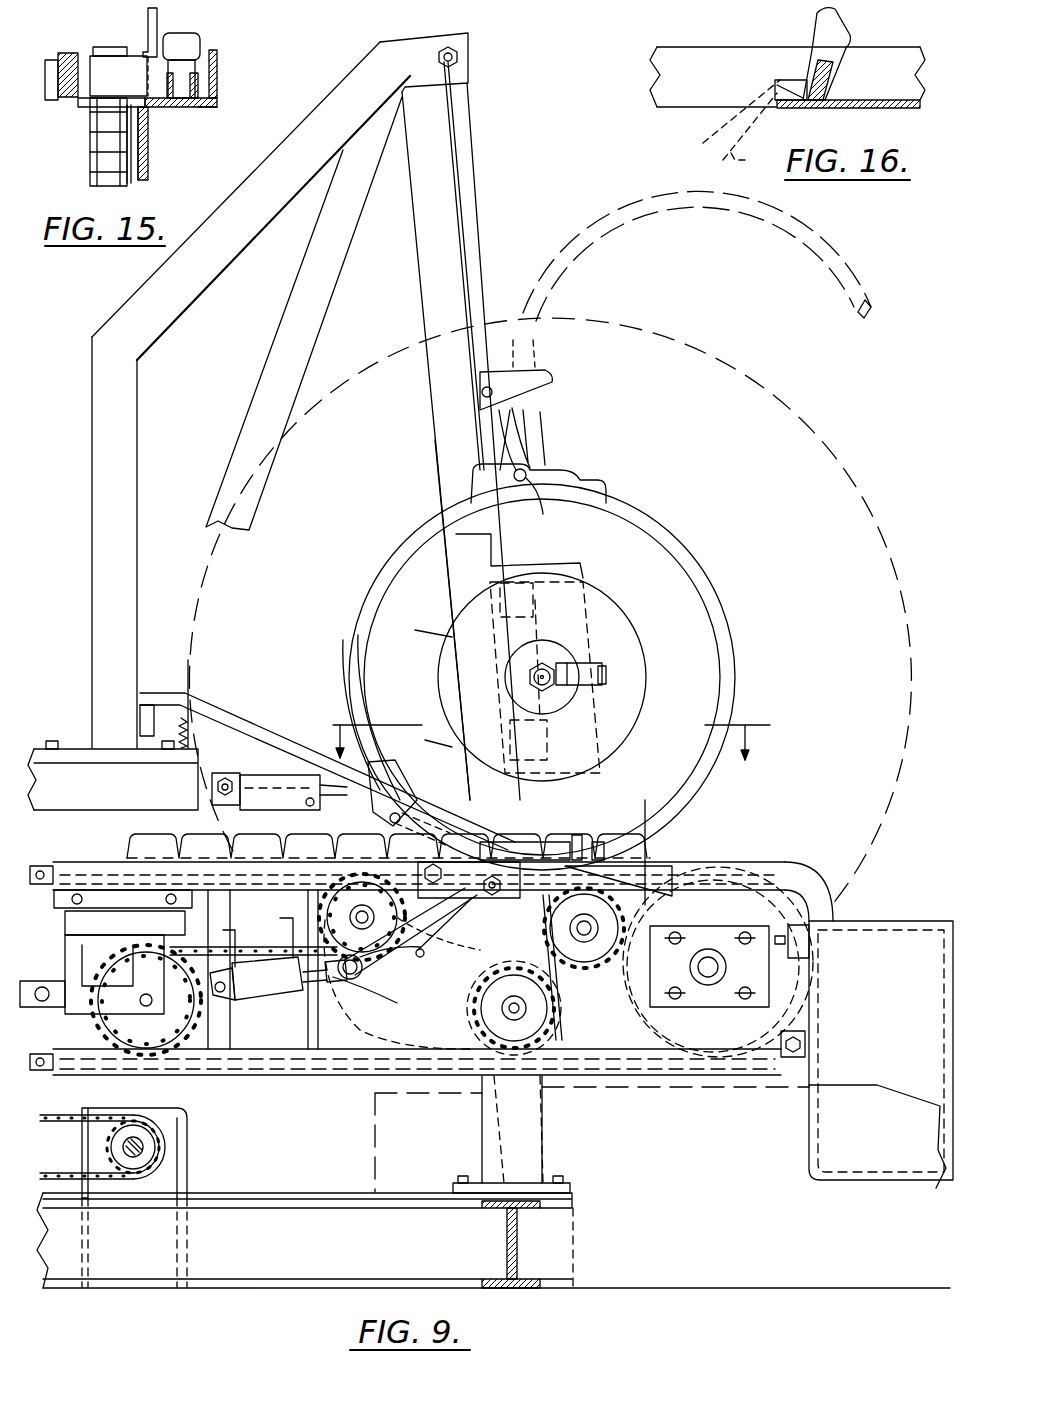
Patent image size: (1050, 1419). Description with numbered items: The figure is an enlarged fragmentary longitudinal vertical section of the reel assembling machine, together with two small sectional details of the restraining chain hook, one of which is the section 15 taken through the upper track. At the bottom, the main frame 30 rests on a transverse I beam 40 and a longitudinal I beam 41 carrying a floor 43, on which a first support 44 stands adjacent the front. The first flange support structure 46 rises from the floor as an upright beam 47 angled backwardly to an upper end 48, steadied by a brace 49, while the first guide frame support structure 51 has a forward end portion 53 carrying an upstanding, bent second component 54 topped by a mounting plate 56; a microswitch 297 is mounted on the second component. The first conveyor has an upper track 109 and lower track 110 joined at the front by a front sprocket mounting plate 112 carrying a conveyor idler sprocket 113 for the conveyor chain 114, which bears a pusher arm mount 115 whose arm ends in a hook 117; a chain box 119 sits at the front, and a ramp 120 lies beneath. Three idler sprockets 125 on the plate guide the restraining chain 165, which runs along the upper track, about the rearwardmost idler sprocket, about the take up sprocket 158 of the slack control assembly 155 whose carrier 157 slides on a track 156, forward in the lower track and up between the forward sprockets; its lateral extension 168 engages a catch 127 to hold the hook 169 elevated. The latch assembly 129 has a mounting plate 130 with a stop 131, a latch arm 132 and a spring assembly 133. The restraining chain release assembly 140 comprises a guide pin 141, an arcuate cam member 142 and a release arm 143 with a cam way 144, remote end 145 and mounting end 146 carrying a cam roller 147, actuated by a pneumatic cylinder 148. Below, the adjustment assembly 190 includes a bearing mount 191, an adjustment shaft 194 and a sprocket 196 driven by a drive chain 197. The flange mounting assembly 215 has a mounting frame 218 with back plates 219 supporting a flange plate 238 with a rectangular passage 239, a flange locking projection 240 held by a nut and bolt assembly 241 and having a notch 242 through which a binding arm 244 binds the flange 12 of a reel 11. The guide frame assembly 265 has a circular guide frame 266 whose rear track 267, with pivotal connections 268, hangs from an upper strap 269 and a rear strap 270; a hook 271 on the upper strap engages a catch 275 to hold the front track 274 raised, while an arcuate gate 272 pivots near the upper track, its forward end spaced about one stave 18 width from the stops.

In FIG. 9, the reel 11 is at (832, 393).
In FIG. 9, the flange 12 is at (838, 455).
In FIG. 9, the motor 15 is at (630, 900).
In FIG. 9, the stave 18 is at (197, 834).
In FIG. 9, the main frame 30 is at (545, 1140).
In FIG. 9, the transverse I beam 40 is at (507, 1236).
In FIG. 9, the longitudinal I beam 41 is at (285, 1265).
In FIG. 9, the floor 43 is at (610, 1288).
In FIG. 9, the first support 44 is at (482, 1128).
In FIG. 9, the first flange support structure 46 is at (88, 332).
In FIG. 9, the upright beam 47 is at (440, 442).
In FIG. 9, the upper end 48 is at (420, 136).
In FIG. 9, the brace 49 is at (338, 275).
In FIG. 9, the first guide frame support structure 51 is at (213, 238).
In FIG. 9, the forward end portion 53 is at (138, 796).
In FIG. 9, the second component 54 is at (108, 543).
In FIG. 9, the mounting plate 56 is at (468, 44).
In FIG. 15, the upper track 109 is at (218, 82).
In FIG. 16, the upper track 109 is at (880, 108).
In FIG. 9, the upper track 109 is at (82, 862).
In FIG. 9, the lower track 110 is at (262, 1077).
In FIG. 15, the front sprocket mounting plate 112 is at (148, 163).
In FIG. 9, the front sprocket mounting plate 112 is at (408, 1040).
In FIG. 9, the conveyor idler sprocket 113 is at (592, 1139).
In FIG. 15, the conveyor chain 114 is at (200, 108).
In FIG. 9, the conveyor chain 114 is at (720, 870).
In FIG. 15, the pusher arm mount 115 is at (190, 55).
In FIG. 15, the hook 117 is at (190, 38).
In FIG. 9, the chain box 119 is at (888, 932).
In FIG. 9, the ramp 120 is at (925, 1100).
In FIG. 9, the idler sprocket 125 is at (350, 900).
In FIG. 15, the catch 127 is at (148, 120).
In FIG. 16, the catch 127 is at (800, 95).
In FIG. 9, the latch assembly 129 is at (618, 820).
In FIG. 9, the mounting plate 130 is at (640, 862).
In FIG. 9, the stop 131 is at (548, 845).
In FIG. 15, the latch arm 132 is at (52, 100).
In FIG. 9, the latch arm 132 is at (598, 842).
In FIG. 9, the spring assembly 133 is at (480, 967).
In FIG. 9, the restraining chain release assembly 140 is at (345, 1042).
In FIG. 9, the guide pin 141 is at (440, 960).
In FIG. 9, the arcuate cam member 142 is at (365, 995).
In FIG. 9, the release arm 143 is at (400, 1003).
In FIG. 9, the cam way 144 is at (420, 948).
In FIG. 9, the remote end 145 is at (423, 984).
In FIG. 9, the mounting end 146 is at (345, 982).
In FIG. 9, the cam roller 147 is at (312, 925).
In FIG. 9, the pneumatic cylinder 148 is at (270, 995).
In FIG. 9, the slack control assembly 155 is at (185, 1050).
In FIG. 9, the track 156 is at (60, 895).
In FIG. 9, the carrier 157 is at (75, 1005).
In FIG. 9, the take up sprocket 158 is at (150, 1048).
In FIG. 15, the restraining chain 165 is at (92, 160).
In FIG. 16, the restraining chain 165 is at (705, 140).
In FIG. 9, the restraining chain 165 is at (255, 947).
In FIG. 15, the lateral extension 168 is at (104, 89).
In FIG. 16, the lateral extension 168 is at (835, 70).
In FIG. 15, the hook 169 is at (148, 13).
In FIG. 16, the hook 169 is at (830, 20).
In FIG. 9, the hook 169 is at (577, 835).
In FIG. 9, the adjustment assembly 190 is at (187, 1150).
In FIG. 9, the bearing mount 191 is at (187, 1185).
In FIG. 9, the adjustment shaft 194 is at (133, 1160).
In FIG. 9, the sprocket 196 is at (110, 1148).
In FIG. 9, the drive chain 197 is at (75, 1113).
In FIG. 9, the flange mounting assembly 215 is at (600, 495).
In FIG. 9, the mounting frame 218 is at (445, 580).
In FIG. 9, the back plate 219 is at (345, 690).
In FIG. 9, the flange plate 238 is at (620, 635).
In FIG. 9, the rectangular passage 239 is at (604, 684).
In FIG. 9, the flange locking projection 240 is at (520, 670).
In FIG. 9, the nut and bolt assembly 241 is at (534, 689).
In FIG. 9, the notch 242 is at (555, 662).
In FIG. 9, the binding arm 244 is at (602, 674).
In FIG. 9, the guide frame assembly 265 is at (568, 450).
In FIG. 9, the guide frame 266 is at (737, 598).
In FIG. 9, the rear track 267 is at (352, 630).
In FIG. 9, the pivotal connection 268 is at (538, 501).
In FIG. 9, the upper strap 269 is at (470, 247).
In FIG. 9, the rear strap 270 is at (270, 778).
In FIG. 9, the hook 271 is at (550, 370).
In FIG. 9, the arcuate gate 272 is at (430, 810).
In FIG. 9, the front track 274 is at (665, 213).
In FIG. 9, the catch 275 is at (556, 381).
In FIG. 9, the microswitch 297 is at (140, 720).